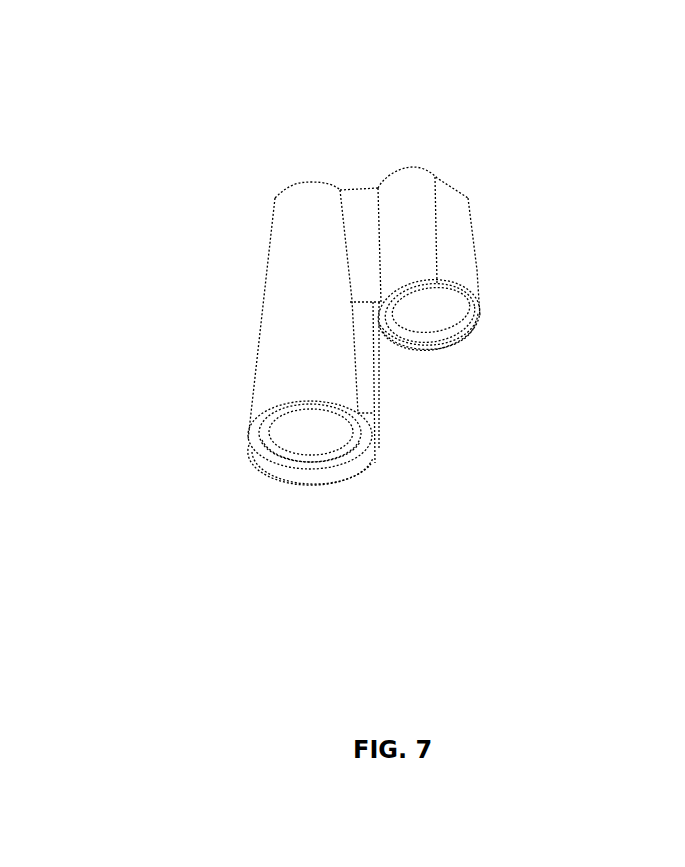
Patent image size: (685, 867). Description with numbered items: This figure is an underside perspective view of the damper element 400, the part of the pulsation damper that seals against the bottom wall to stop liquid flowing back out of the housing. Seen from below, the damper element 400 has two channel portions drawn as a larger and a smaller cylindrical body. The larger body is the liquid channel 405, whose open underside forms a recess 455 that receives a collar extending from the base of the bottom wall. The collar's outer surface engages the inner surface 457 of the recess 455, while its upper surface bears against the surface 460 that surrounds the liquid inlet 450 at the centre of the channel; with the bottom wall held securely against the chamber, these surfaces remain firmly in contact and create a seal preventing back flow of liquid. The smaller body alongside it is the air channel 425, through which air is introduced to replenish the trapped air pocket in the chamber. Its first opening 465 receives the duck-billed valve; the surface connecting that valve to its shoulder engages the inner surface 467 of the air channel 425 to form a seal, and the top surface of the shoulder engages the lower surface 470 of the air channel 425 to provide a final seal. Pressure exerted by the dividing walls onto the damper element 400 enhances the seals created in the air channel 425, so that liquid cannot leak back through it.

The damper element 400 is at (172, 102).
The liquid channel 405 is at (275, 357).
The air channel 425 is at (407, 190).
The liquid inlet 450 is at (297, 438).
The recess 455 is at (338, 466).
The inner surface of the recess 457 is at (298, 463).
The surface around the liquid inlet 460 is at (263, 440).
The first opening of the air channel 465 is at (441, 292).
The inner surface of the air channel 467 is at (426, 313).
The lower surface of the air channel 470 is at (390, 315).